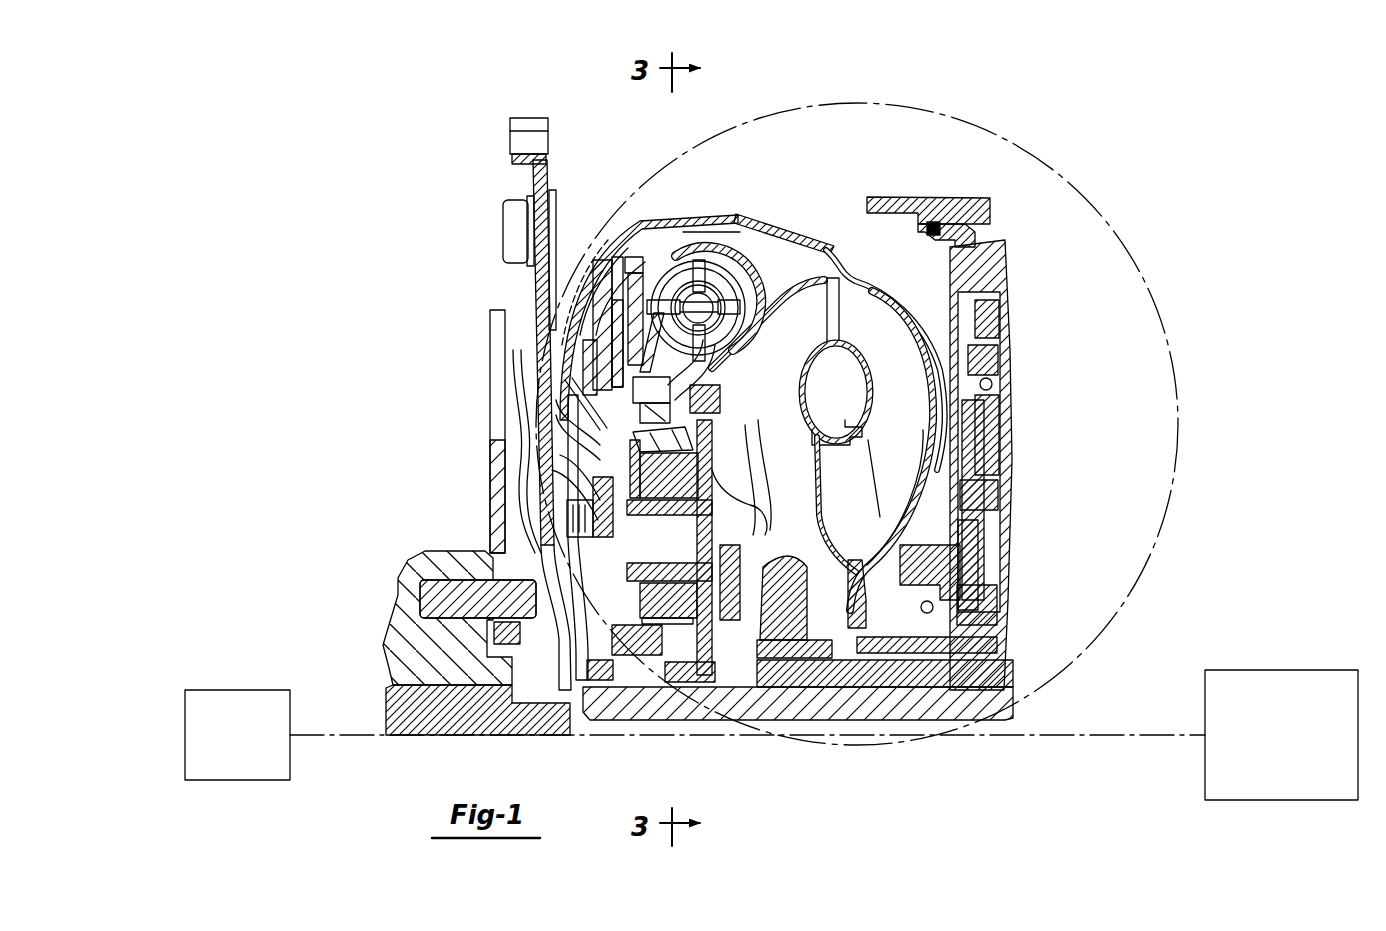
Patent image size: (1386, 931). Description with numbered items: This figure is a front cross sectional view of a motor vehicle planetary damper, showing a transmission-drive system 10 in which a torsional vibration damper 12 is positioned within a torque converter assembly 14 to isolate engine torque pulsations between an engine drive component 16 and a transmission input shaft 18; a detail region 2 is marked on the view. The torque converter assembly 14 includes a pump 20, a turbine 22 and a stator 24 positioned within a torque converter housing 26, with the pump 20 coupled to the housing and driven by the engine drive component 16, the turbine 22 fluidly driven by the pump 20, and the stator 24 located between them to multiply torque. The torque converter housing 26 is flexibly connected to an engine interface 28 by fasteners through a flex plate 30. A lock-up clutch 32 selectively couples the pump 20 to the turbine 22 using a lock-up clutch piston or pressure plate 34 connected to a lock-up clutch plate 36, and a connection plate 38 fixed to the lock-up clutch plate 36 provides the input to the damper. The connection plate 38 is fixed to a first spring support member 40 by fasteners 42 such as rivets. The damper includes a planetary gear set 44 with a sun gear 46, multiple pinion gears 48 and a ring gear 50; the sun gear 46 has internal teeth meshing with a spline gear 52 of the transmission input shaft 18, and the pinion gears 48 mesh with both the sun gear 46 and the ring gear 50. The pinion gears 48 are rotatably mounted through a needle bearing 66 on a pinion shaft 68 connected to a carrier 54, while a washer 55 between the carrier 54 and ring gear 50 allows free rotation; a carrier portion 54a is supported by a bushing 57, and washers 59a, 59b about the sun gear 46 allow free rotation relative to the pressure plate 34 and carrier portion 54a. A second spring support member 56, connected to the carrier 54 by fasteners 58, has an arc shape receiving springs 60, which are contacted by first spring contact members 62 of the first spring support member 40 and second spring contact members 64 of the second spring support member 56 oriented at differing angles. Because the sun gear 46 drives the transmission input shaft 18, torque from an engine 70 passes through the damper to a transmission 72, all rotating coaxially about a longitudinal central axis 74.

The detail section circle 2 is at (1091, 169).
The transmission-drive system 10 is at (894, 174).
The torsional vibration damper 12 is at (745, 357).
The torque converter assembly 14 is at (822, 252).
The engine drive component 16 is at (398, 712).
The transmission input shaft 18 is at (960, 705).
The pump 20 is at (893, 375).
The turbine 22 is at (960, 475).
The stator 24 is at (846, 448).
The torque converter housing 26 is at (633, 218).
The engine interface 28 is at (540, 178).
The flex plate 30 is at (552, 200).
The lock-up clutch 32 is at (580, 584).
The lock-up clutch piston or pressure plate 34 is at (597, 488).
The lock-up clutch plate 36 is at (600, 318).
The connection plate 38 is at (635, 290).
The first spring support member 40 is at (598, 335).
The fasteners 42 is at (650, 388).
The planetary gear set 44 is at (728, 505).
The sun gear 46 is at (645, 661).
The pinion gears 48 is at (655, 473).
The ring gear 50 is at (645, 450).
The spline gear 52 is at (655, 692).
The carrier 54 is at (717, 460).
The carrier portion 54a is at (763, 600).
The washer 55 is at (725, 428).
The second spring support member 56 is at (748, 272).
The bushing 57 is at (680, 665).
The fasteners 58 is at (714, 400).
The washer 59a is at (730, 707).
The washer 59b is at (636, 575).
The springs 60 is at (765, 330).
The first spring contact members 62 is at (733, 300).
The second spring contact members 64 is at (698, 262).
The needle bearing 66 is at (702, 482).
The pinion shaft 68 is at (940, 520).
The engine 70 is at (248, 690).
The transmission 72 is at (1258, 670).
The longitudinal central axis 74 is at (1012, 737).